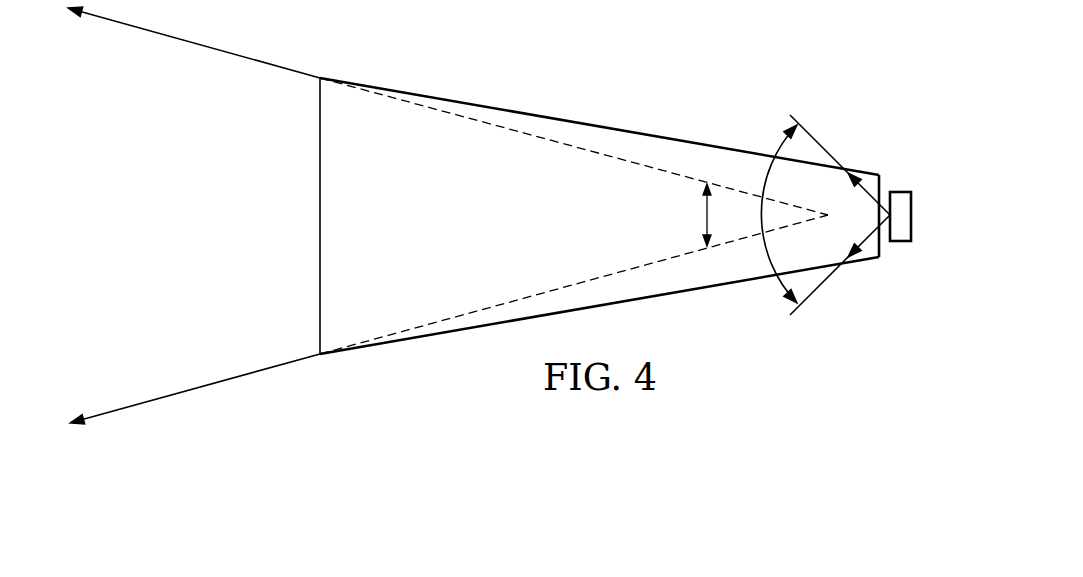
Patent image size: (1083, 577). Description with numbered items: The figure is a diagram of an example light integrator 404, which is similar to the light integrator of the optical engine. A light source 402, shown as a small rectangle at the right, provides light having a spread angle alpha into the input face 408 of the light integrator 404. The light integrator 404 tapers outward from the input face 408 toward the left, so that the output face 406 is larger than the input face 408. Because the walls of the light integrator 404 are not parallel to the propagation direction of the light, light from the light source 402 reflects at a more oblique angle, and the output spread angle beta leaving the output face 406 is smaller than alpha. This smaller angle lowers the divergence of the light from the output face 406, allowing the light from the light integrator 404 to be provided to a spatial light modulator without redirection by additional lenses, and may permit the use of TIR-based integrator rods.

The light source 402 is at (913, 206).
The light integrator 404 is at (598, 125).
The output face 406 is at (322, 357).
The input face 408 is at (881, 248).